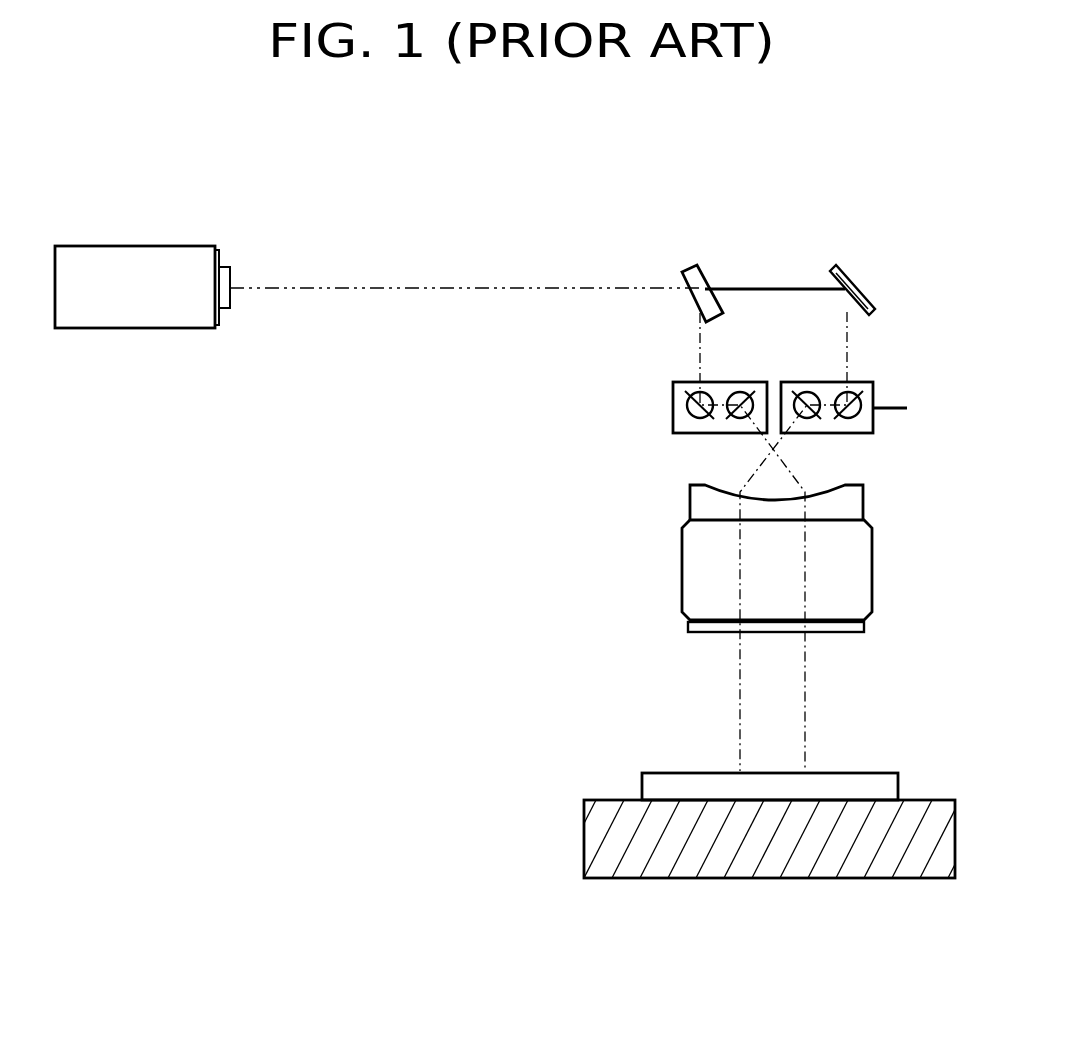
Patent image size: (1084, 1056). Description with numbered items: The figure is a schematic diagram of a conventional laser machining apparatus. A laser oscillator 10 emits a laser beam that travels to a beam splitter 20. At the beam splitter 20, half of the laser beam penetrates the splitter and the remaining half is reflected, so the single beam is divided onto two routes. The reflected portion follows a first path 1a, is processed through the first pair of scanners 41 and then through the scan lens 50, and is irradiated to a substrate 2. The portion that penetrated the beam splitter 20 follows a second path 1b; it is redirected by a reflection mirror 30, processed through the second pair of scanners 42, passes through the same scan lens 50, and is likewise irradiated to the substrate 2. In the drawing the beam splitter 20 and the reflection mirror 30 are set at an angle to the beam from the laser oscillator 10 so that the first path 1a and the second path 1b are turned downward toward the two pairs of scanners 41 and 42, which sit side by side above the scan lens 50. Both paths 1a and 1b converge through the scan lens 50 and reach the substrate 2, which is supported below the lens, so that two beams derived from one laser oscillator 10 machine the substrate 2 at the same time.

The laser oscillator 10 is at (167, 272).
The beam splitter 20 is at (703, 276).
The reflection mirror 30 is at (853, 274).
The first path 1a is at (698, 336).
The second path 1b is at (848, 336).
The first pair of scanners 41 is at (680, 435).
The second pair of scanners 42 is at (858, 435).
The scan lens 50 is at (860, 575).
The substrate 2 is at (887, 783).